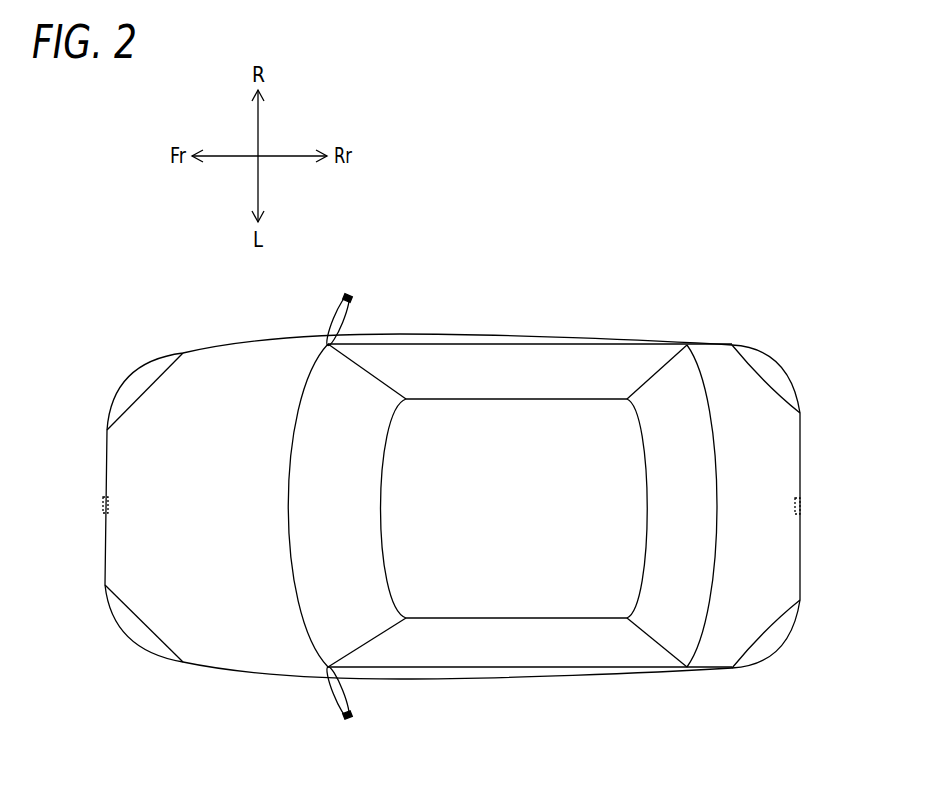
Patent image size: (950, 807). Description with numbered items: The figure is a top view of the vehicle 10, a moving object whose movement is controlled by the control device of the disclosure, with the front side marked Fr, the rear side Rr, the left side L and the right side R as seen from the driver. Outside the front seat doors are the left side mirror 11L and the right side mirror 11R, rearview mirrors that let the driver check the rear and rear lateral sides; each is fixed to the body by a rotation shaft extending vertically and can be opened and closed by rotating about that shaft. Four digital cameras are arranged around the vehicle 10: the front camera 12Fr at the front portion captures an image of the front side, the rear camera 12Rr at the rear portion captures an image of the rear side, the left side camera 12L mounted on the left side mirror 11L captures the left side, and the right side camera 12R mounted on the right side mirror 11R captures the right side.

The vehicle 10 is at (603, 337).
The right side mirror 11R is at (330, 340).
The left side mirror 11L is at (334, 690).
The right side camera 12R is at (353, 297).
The left side camera 12L is at (353, 716).
The front camera 12Fr is at (100, 503).
The rear camera 12Rr is at (805, 502).